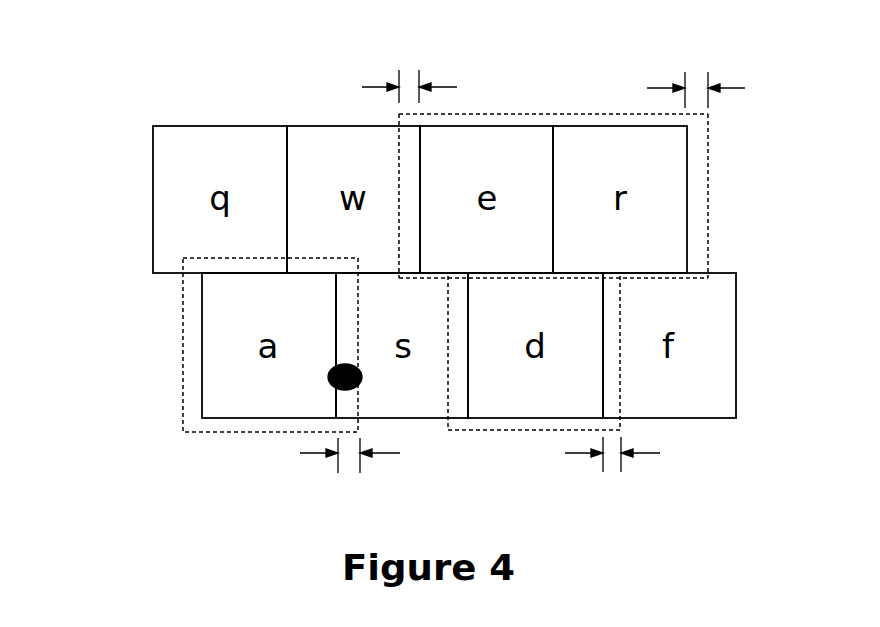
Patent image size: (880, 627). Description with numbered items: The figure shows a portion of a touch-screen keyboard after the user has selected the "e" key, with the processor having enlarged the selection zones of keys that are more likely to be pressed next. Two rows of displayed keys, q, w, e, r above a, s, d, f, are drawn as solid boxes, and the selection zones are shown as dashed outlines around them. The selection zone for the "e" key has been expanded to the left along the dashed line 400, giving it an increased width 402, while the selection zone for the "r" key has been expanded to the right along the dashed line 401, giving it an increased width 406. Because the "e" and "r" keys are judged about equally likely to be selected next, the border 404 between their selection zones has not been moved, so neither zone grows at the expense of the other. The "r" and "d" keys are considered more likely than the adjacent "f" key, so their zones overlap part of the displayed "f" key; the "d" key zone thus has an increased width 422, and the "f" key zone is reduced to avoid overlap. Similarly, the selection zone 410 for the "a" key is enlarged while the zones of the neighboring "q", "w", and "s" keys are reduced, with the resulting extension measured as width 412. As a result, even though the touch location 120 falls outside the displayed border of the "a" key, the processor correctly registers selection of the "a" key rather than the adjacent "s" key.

The touch location 120 is at (342, 386).
The dashed line 400 is at (397, 170).
The dashed line 401 is at (708, 190).
The increased width 402 is at (410, 85).
The border 404 is at (567, 125).
The increased width 406 is at (695, 85).
The selection zone 410 is at (183, 355).
The expansion width 412 is at (348, 460).
The increased width 422 is at (613, 460).